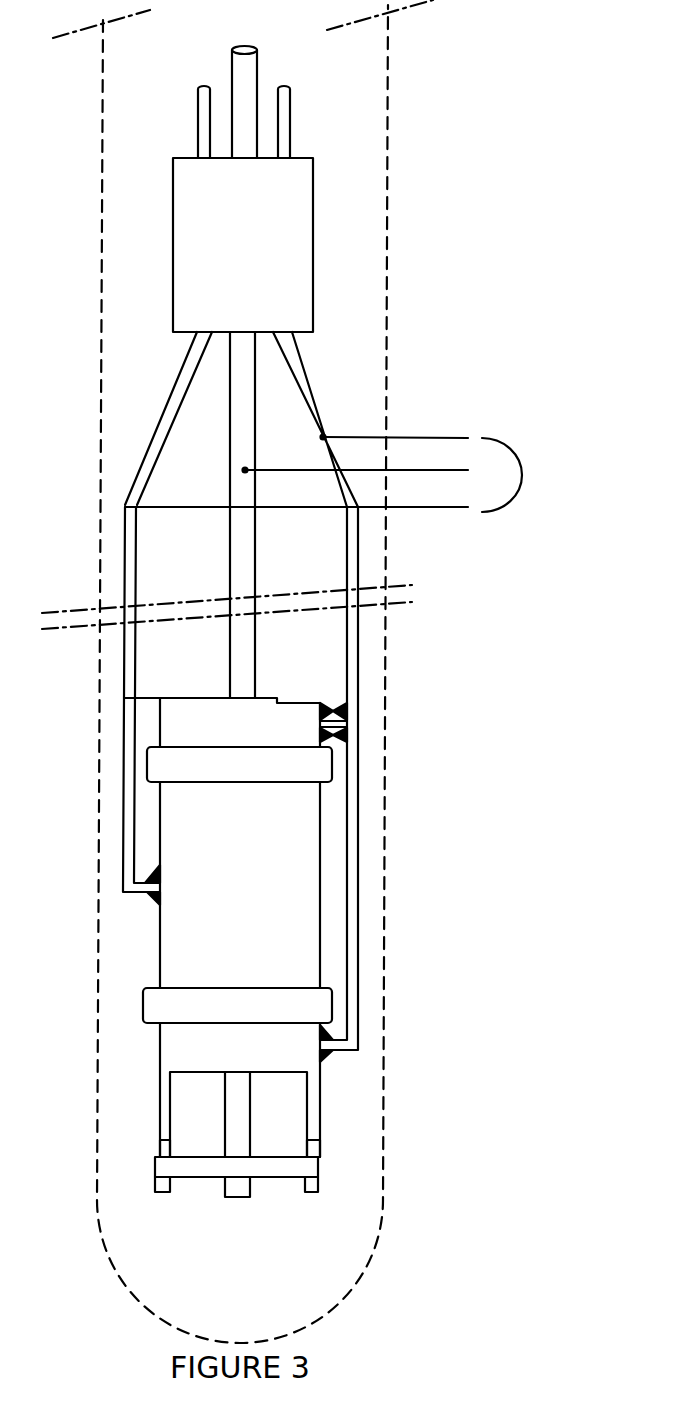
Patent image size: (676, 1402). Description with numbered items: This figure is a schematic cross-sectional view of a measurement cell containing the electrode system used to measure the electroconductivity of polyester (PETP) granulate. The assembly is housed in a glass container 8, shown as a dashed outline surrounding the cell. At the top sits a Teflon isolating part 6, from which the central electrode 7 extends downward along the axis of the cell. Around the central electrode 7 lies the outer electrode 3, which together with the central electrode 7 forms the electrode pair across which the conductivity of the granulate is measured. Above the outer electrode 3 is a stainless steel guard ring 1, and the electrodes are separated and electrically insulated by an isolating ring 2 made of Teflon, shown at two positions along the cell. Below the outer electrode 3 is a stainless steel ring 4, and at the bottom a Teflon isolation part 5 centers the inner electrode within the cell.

The stainless steel guard ring 1 is at (280, 704).
The isolating ring 2 is at (297, 763).
The outer electrode 3 is at (287, 857).
The stainless steel ring 4 is at (288, 1060).
The Teflon isolation part 5 is at (293, 1168).
The Teflon isolating part 6 is at (282, 215).
The central electrode 7 is at (242, 353).
The glass container 8 is at (385, 288).